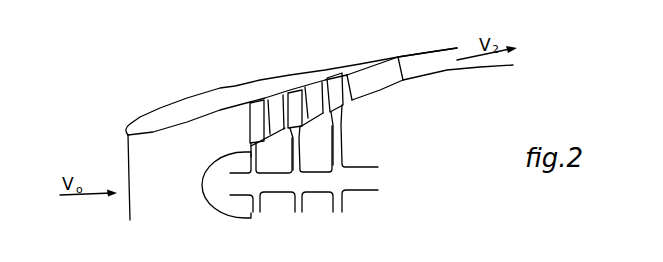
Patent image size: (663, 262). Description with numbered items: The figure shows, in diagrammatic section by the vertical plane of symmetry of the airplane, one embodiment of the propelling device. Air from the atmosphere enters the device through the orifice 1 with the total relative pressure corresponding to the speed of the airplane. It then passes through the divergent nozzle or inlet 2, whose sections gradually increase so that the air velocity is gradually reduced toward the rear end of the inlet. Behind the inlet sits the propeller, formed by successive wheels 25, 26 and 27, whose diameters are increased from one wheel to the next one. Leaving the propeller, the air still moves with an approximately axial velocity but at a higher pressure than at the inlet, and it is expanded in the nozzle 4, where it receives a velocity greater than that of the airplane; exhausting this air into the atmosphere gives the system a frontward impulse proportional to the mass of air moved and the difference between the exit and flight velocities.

The orifice 1 is at (142, 178).
The divergent nozzle or inlet 2 is at (202, 140).
The nozzle 4 is at (423, 68).
The wheel 25 is at (255, 110).
The wheel 26 is at (293, 101).
The wheel 27 is at (334, 90).